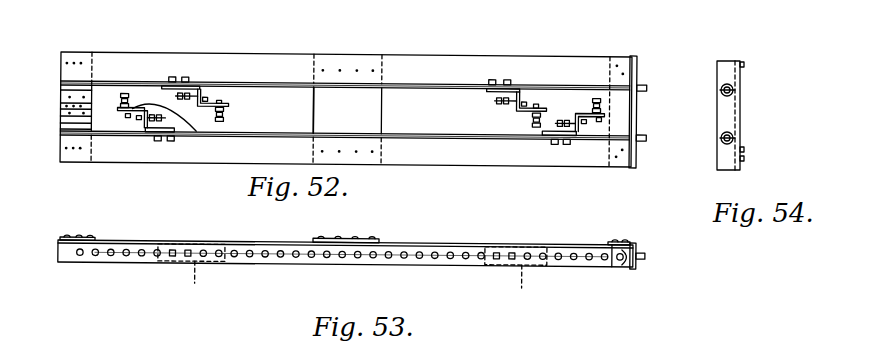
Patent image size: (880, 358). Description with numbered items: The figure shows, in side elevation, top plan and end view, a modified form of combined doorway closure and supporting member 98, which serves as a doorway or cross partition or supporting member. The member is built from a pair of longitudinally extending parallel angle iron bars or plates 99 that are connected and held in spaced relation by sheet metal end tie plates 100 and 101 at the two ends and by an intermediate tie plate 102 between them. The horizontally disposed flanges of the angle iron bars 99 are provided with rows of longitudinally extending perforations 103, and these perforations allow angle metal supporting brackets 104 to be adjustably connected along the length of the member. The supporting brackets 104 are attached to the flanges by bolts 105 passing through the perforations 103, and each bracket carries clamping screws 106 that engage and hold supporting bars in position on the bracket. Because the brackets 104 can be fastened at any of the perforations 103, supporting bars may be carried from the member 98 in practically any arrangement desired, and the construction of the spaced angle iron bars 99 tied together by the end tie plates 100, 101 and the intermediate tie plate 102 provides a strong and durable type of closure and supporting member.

In FIG. 52, the combined doorway closure and supporting member 98 is at (282, 61).
In FIG. 53, the combined doorway closure and supporting member 98 is at (452, 265).
In FIG. 52, the angle iron bars 99 is at (428, 59).
In FIG. 53, the angle iron bars 99 is at (340, 263).
In FIG. 54, the angle iron bars 99 is at (733, 75).
In FIG. 52, the end tie plate 100 is at (617, 108).
In FIG. 53, the end tie plate 100 is at (620, 246).
In FIG. 54, the end tie plate 100 is at (727, 111).
In FIG. 52, the end tie plate 101 is at (61, 87).
In FIG. 53, the end tie plate 101 is at (77, 233).
In FIG. 52, the intermediate tie plate 102 is at (318, 101).
In FIG. 53, the intermediate tie plate 102 is at (347, 234).
In FIG. 53, the perforations 103 is at (309, 263).
In FIG. 52, the angle metal supporting brackets 104 is at (197, 89).
In FIG. 53, the angle metal supporting brackets 104 is at (352, 275).
In FIG. 52, the bolts 105 is at (173, 75).
In FIG. 53, the bolts 105 is at (187, 259).
In FIG. 52, the clamping screws 106 is at (205, 97).